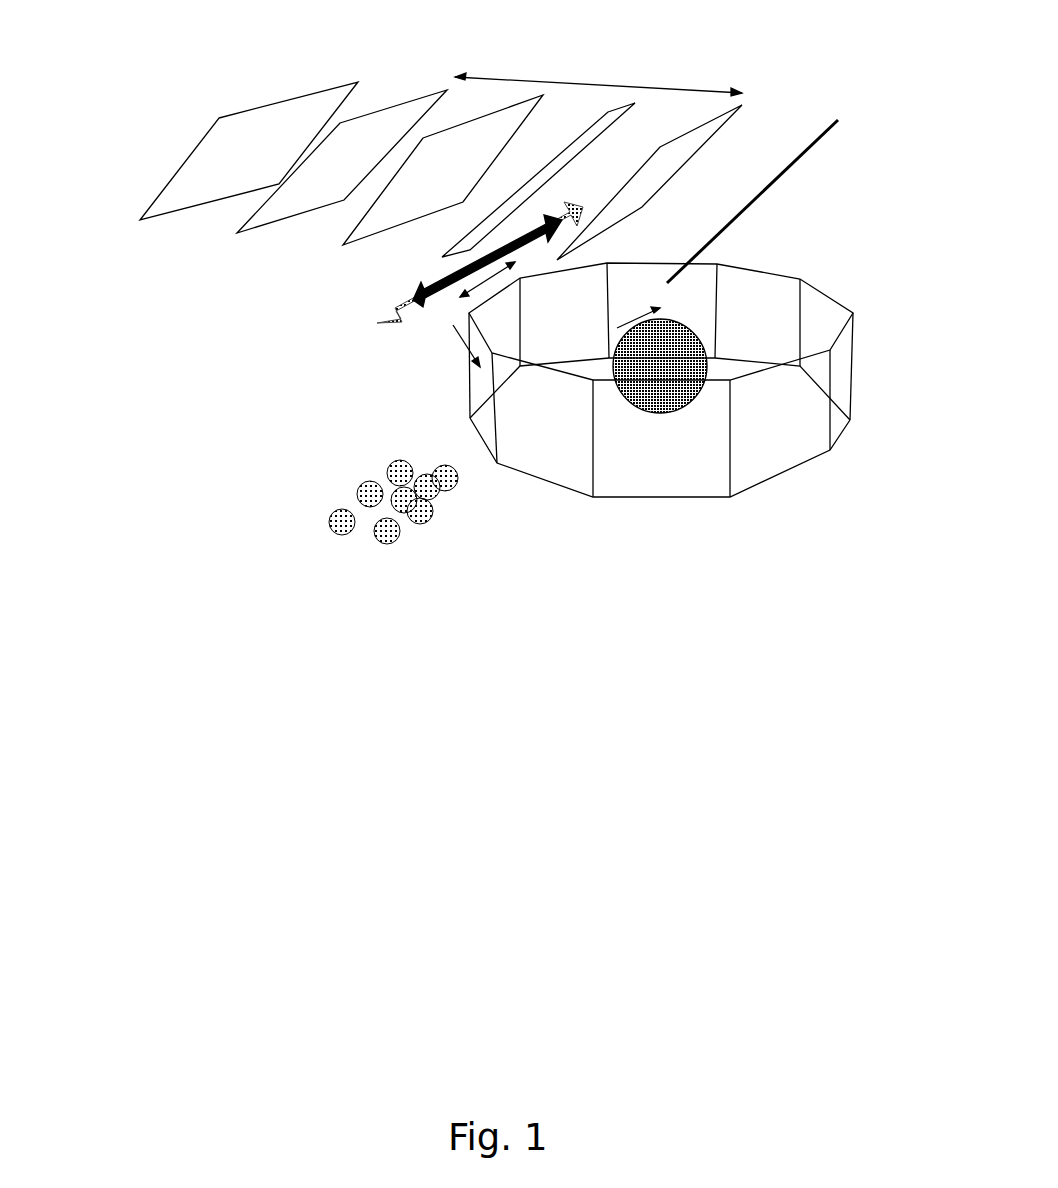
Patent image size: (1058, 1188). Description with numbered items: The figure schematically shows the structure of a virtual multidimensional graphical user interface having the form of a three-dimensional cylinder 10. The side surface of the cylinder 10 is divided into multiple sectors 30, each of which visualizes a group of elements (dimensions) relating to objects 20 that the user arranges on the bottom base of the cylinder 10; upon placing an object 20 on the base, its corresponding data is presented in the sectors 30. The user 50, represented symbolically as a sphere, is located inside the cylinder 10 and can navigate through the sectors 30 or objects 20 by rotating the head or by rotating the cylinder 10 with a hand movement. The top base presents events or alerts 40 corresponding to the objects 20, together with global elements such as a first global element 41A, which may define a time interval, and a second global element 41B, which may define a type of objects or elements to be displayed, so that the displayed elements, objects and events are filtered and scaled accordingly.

The cylinder 10 is at (818, 260).
The objects 20 is at (333, 514).
The sectors 30 is at (762, 450).
The events or alerts 40 is at (218, 120).
The first global element 41A is at (442, 278).
The second global element 41B is at (377, 317).
The user 50 is at (680, 343).